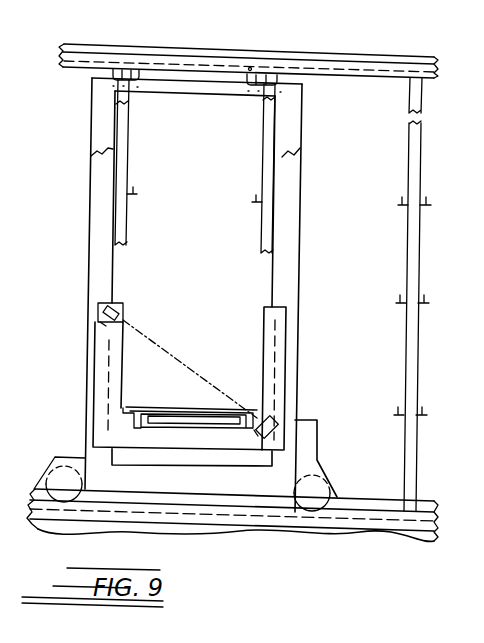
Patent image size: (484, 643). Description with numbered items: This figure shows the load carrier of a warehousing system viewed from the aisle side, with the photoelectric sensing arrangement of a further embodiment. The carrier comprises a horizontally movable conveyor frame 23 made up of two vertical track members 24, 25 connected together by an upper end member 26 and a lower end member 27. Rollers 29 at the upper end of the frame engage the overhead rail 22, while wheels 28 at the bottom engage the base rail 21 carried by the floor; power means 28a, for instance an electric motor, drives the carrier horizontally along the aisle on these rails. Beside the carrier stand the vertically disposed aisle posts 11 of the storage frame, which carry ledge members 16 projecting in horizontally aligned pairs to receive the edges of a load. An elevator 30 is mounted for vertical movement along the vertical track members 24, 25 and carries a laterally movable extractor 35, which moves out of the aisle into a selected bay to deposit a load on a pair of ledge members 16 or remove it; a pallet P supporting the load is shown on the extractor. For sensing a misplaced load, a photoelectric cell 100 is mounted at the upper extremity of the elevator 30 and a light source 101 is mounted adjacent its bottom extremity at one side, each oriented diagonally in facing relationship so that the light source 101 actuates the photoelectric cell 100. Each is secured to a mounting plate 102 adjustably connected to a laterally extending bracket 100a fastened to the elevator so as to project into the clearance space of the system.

The aisle posts 11 is at (128, 136).
The ledge members 16 is at (136, 194).
The base rail 21 is at (291, 513).
The overhead rail 22 is at (250, 68).
The horizontally movable conveyor frame 23 is at (304, 98).
The vertical track member 24 is at (97, 210).
The vertical track member 25 is at (302, 222).
The upper end member 26 is at (196, 85).
The lower end member 27 is at (192, 486).
The wheels 28 is at (46, 495).
The power means 28a is at (318, 432).
The rollers 29 is at (139, 76).
The elevator 30 is at (272, 306).
The extractor 35 is at (142, 407).
The pallet P is at (170, 400).
The photoelectric cell 100 is at (124, 311).
The bracket 100a is at (103, 326).
The light source 101 is at (270, 420).
The mounting plate 102 is at (98, 317).